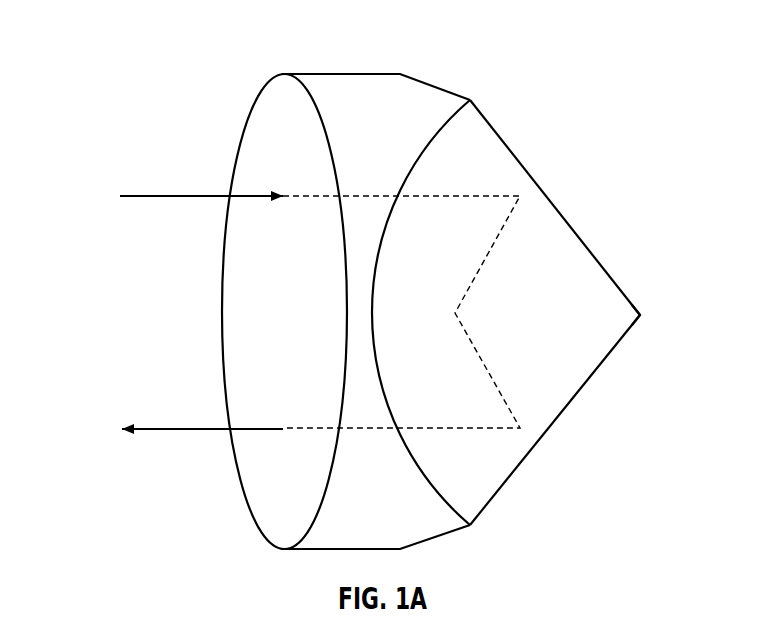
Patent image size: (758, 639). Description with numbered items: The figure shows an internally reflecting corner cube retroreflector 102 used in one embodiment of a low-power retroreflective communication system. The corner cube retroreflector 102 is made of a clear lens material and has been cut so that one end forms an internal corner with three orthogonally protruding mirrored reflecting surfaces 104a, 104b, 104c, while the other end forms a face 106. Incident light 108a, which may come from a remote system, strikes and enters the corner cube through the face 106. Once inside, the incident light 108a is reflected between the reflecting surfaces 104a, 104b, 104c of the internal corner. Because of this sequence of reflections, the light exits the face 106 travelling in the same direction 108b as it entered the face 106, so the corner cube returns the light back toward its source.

The corner cube retroreflector 102 is at (115, 47).
The reflecting surface 104a is at (538, 152).
The reflecting surface 104b is at (541, 456).
The reflecting surface 104c is at (622, 307).
The face 106 is at (282, 508).
The incident light 108a is at (150, 195).
The direction 108b is at (148, 428).